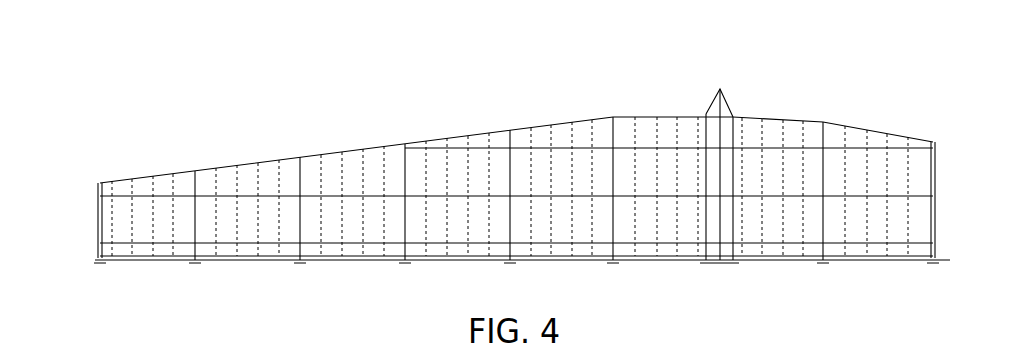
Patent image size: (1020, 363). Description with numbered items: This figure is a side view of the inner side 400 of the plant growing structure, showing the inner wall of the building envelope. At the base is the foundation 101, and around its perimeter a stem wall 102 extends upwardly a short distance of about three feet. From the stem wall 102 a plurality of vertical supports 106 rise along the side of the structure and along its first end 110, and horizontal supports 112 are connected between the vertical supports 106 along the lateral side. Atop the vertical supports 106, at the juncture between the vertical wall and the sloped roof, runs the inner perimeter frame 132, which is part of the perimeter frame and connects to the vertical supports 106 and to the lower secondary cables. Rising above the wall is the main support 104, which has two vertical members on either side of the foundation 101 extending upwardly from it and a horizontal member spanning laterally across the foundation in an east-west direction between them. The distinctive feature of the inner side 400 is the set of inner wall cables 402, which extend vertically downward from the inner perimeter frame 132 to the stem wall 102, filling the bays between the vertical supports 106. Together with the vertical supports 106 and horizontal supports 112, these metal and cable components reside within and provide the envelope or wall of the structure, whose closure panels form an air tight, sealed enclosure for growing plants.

The inner side 400 is at (356, 110).
The inner perimeter frame 132 is at (500, 128).
The main support 104 is at (728, 107).
The first end 110 is at (86, 223).
The vertical supports 106 is at (300, 229).
The inner wall cables 402 is at (342, 231).
The horizontal supports 112 is at (435, 197).
The foundation 101 is at (650, 255).
The stem wall 102 is at (860, 247).